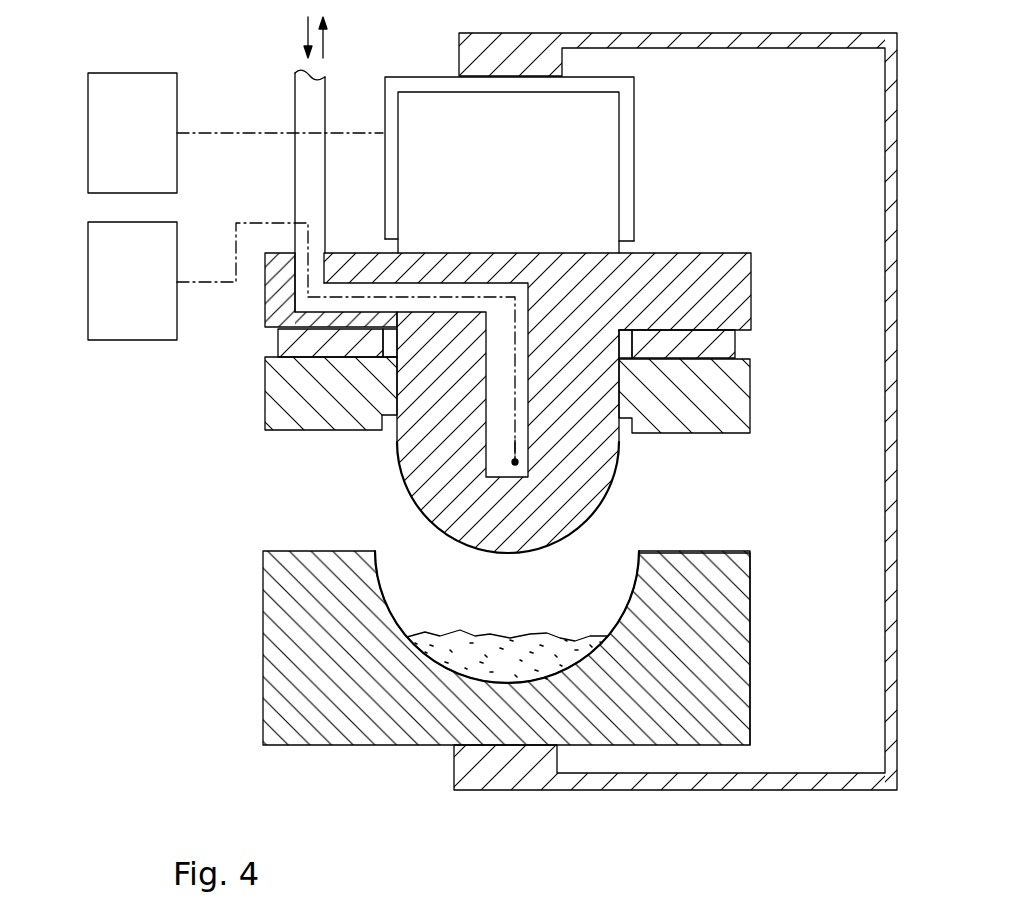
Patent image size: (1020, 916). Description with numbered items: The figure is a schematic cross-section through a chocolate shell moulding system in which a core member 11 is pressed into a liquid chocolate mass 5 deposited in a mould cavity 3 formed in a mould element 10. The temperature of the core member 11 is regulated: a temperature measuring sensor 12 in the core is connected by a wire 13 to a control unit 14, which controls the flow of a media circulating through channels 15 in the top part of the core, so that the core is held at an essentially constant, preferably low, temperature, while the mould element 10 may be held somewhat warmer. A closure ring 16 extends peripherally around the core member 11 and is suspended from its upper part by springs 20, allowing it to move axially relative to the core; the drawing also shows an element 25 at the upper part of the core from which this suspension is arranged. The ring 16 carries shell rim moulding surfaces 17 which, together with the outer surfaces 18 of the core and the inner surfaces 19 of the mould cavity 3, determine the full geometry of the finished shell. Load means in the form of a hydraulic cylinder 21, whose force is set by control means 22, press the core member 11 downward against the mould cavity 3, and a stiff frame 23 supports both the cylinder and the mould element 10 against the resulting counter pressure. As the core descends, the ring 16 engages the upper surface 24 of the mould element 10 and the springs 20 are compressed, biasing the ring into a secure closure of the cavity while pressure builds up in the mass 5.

The mould cavity 3 is at (536, 590).
The mass 5 is at (470, 655).
The mould element 10 is at (290, 607).
The core member 11 is at (437, 465).
The temperature measuring sensor 12 is at (537, 440).
The wire 13 is at (233, 237).
The control unit 14 is at (130, 257).
The channels 15 is at (310, 103).
The ring 16 is at (308, 387).
The shell rim moulding surfaces 17 is at (380, 442).
The outer surfaces 18 is at (480, 548).
The inner surfaces 19 is at (383, 595).
The springs 20 is at (720, 345).
The hydraulic cylinder 21 is at (590, 137).
The control means 22 is at (147, 105).
The frame 23 is at (885, 133).
The upper surface 24 is at (705, 553).
The punch holder plate 25 is at (728, 300).